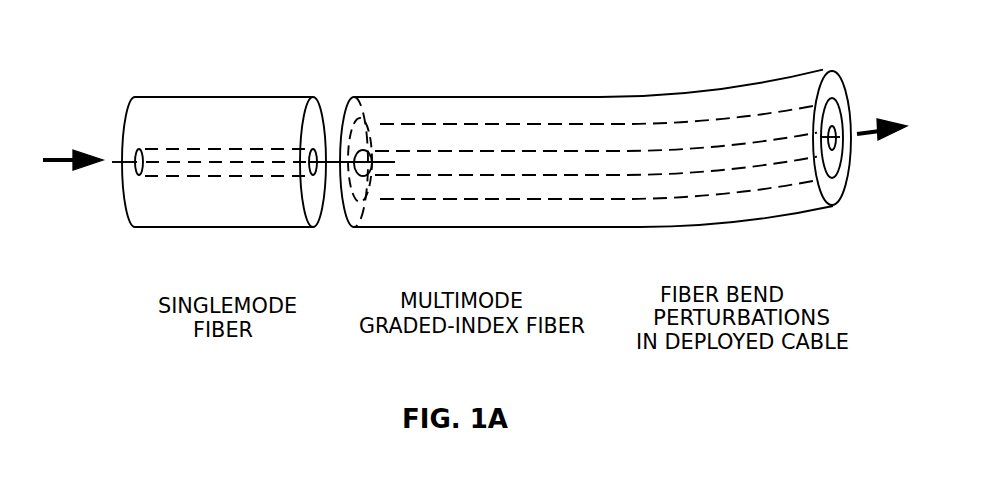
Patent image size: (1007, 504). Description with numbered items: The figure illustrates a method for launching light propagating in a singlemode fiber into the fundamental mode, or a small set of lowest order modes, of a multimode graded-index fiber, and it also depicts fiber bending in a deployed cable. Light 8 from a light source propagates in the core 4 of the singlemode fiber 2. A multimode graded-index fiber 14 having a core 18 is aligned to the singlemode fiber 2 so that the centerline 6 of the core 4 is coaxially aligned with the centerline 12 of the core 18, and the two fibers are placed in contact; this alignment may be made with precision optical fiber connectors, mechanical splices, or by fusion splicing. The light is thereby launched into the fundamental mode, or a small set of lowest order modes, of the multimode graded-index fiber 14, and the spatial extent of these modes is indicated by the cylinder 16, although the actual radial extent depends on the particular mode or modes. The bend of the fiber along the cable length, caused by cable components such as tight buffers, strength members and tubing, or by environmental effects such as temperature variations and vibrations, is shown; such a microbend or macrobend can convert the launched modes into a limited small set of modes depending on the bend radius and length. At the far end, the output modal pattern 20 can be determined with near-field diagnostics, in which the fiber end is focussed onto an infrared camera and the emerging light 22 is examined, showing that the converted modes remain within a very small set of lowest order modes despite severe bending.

The singlemode fiber 2 is at (170, 97).
The core 4 is at (212, 149).
The centerline 6 is at (253, 162).
The light 8 is at (53, 162).
The centerline 12 is at (437, 163).
The multimode graded-index fiber 14 is at (426, 97).
The cylinder 16 is at (517, 152).
The core 18 is at (605, 124).
The output modal pattern 20 is at (834, 98).
The light 22 is at (867, 140).